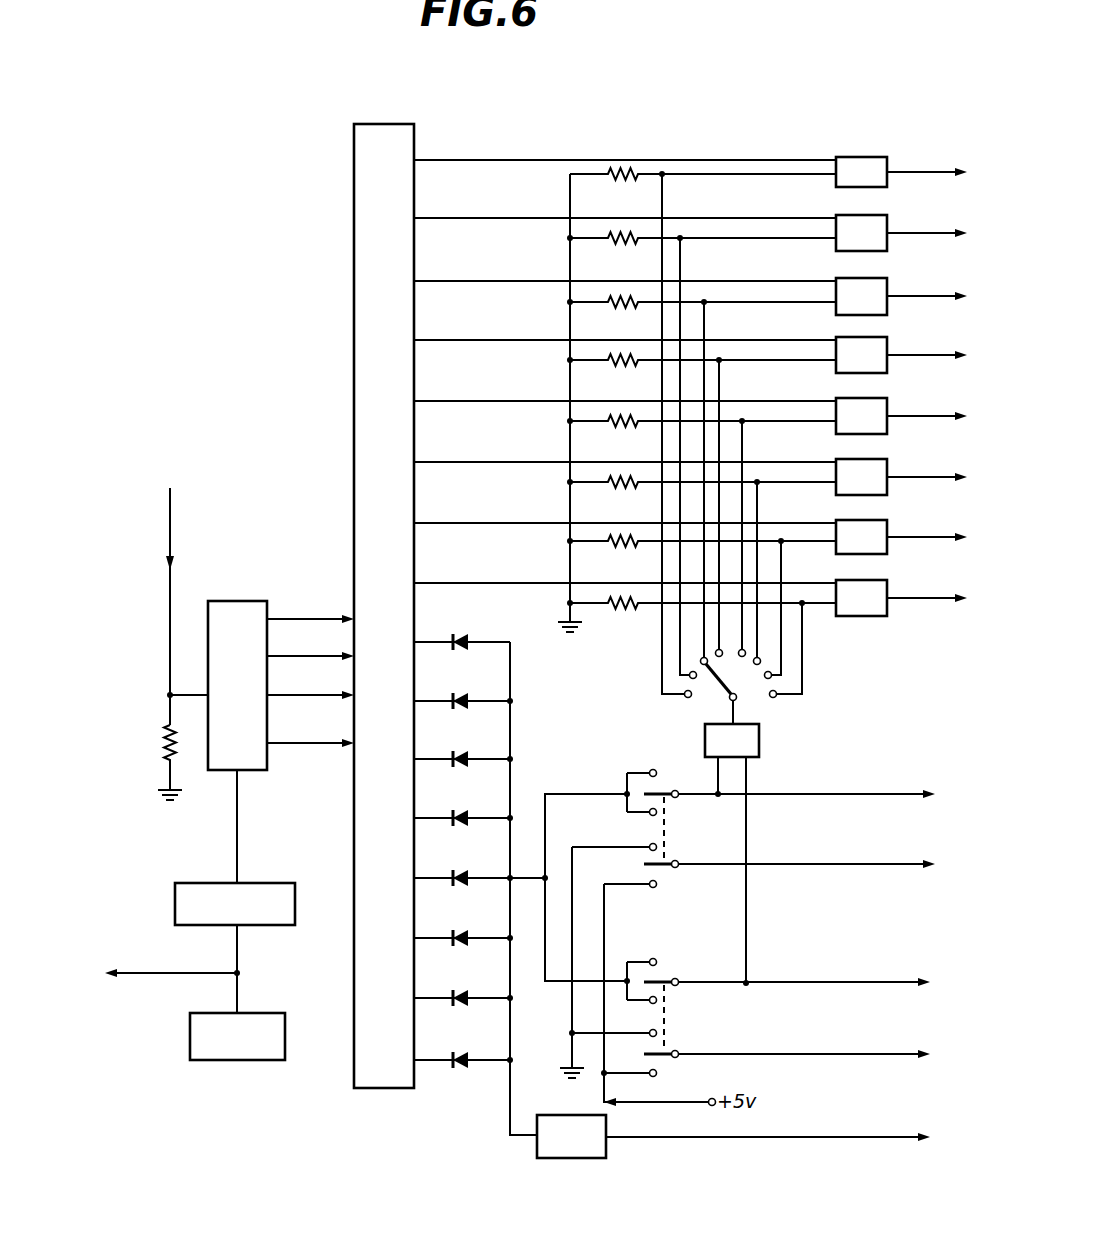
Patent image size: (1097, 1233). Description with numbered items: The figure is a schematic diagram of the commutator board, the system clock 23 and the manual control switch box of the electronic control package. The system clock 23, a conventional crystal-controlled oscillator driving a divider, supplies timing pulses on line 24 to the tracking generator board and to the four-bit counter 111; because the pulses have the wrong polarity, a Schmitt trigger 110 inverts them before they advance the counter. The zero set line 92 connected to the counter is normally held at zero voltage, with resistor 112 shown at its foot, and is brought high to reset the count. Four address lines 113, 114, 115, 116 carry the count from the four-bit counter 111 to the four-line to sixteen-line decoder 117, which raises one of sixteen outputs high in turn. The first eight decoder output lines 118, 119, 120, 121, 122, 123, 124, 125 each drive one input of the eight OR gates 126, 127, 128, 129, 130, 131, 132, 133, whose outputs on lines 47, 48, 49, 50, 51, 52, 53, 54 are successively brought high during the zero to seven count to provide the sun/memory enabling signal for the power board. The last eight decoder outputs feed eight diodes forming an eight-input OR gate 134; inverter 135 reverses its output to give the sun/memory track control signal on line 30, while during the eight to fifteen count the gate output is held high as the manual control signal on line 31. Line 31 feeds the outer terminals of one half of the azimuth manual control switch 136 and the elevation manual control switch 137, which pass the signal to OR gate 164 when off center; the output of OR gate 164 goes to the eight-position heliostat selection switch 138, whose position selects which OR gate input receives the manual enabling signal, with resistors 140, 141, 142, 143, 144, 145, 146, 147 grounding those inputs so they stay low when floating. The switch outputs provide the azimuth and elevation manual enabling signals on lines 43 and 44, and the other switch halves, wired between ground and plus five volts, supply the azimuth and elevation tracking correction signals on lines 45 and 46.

The system clock 23 is at (260, 1060).
The line 24 is at (237, 971).
The line 30 is at (915, 1140).
The line 31 is at (545, 877).
The line 43 is at (925, 794).
The line 44 is at (912, 982).
The line 45 is at (920, 868).
The line 46 is at (912, 1058).
The output line 47 is at (946, 172).
The output line 48 is at (950, 232).
The output line 49 is at (946, 294).
The output line 50 is at (952, 352).
The output line 51 is at (947, 414).
The output line 52 is at (949, 474).
The output line 53 is at (950, 535).
The output line 54 is at (950, 597).
The zero set line 92 is at (170, 509).
The Schmitt trigger 110 is at (175, 900).
The 4-bit counter 111 is at (232, 601).
The resistor 112 is at (163, 745).
The address line 113 is at (291, 619).
The address line 114 is at (296, 656).
The address line 115 is at (296, 695).
The address line 116 is at (296, 743).
The 4-line to 16-line decoder 117 is at (352, 419).
The decoder output line 118 is at (488, 160).
The decoder output line 119 is at (488, 218).
The decoder output line 120 is at (491, 281).
The decoder output line 121 is at (478, 340).
The decoder output line 122 is at (477, 401).
The decoder output line 123 is at (481, 462).
The decoder output line 124 is at (478, 523).
The decoder output line 125 is at (478, 583).
The OR gate 126 is at (838, 158).
The OR gate 127 is at (838, 216).
The OR gate 128 is at (838, 279).
The OR gate 129 is at (838, 338).
The OR gate 130 is at (838, 399).
The OR gate 131 is at (838, 460).
The OR gate 132 is at (838, 521).
The OR gate 133 is at (838, 581).
The 8-input OR gate 134 is at (513, 682).
The inverter 135 is at (590, 1158).
The azimuth manual control switch 136 is at (669, 790).
The elevation manual control switch 137 is at (662, 980).
The 8-position heliostat selection switch 138 is at (743, 688).
The resistor 140 is at (632, 170).
The resistor 141 is at (633, 234).
The resistor 142 is at (633, 298).
The resistor 143 is at (630, 356).
The resistor 144 is at (628, 417).
The resistor 145 is at (627, 477).
The resistor 146 is at (622, 538).
The resistor 147 is at (622, 599).
The OR gate 164 is at (705, 741).